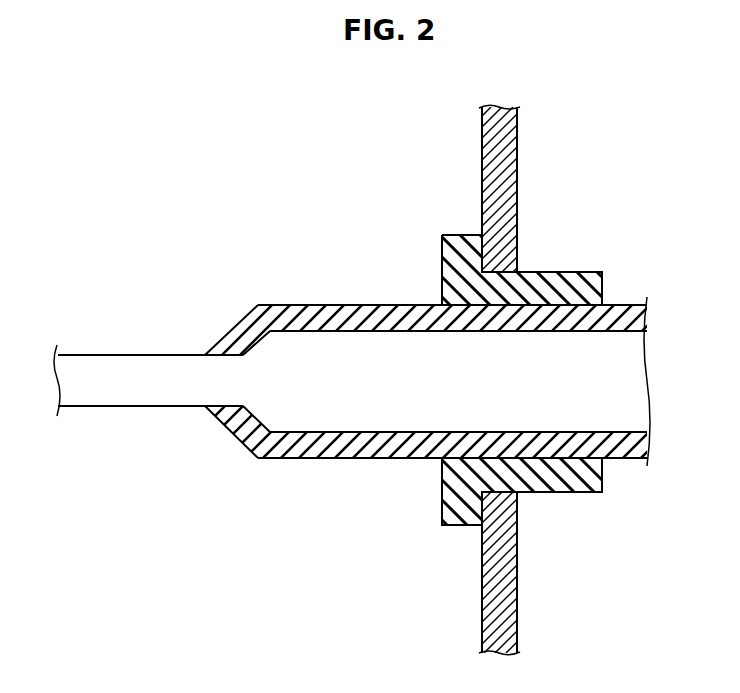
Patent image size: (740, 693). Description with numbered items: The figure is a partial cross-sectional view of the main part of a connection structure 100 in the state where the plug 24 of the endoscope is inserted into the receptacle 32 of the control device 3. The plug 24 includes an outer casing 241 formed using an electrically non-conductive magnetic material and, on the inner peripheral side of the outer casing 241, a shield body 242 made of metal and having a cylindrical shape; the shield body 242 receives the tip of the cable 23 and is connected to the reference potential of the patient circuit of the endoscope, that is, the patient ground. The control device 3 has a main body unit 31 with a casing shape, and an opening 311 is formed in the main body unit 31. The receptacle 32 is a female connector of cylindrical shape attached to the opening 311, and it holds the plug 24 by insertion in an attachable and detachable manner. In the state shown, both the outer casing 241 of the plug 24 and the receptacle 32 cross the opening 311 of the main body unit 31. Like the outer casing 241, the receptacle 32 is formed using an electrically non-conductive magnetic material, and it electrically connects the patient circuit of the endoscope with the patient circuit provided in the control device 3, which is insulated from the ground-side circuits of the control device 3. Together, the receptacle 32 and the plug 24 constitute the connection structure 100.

The connection structure 100 is at (384, 146).
The cable 23 is at (128, 354).
The plug 24 is at (323, 305).
The outer casing 241 is at (228, 418).
The shield body 242 is at (374, 400).
The control device 3 is at (496, 380).
The main body unit 31 is at (518, 203).
The receptacle 32 is at (537, 271).
The opening 311 is at (505, 481).